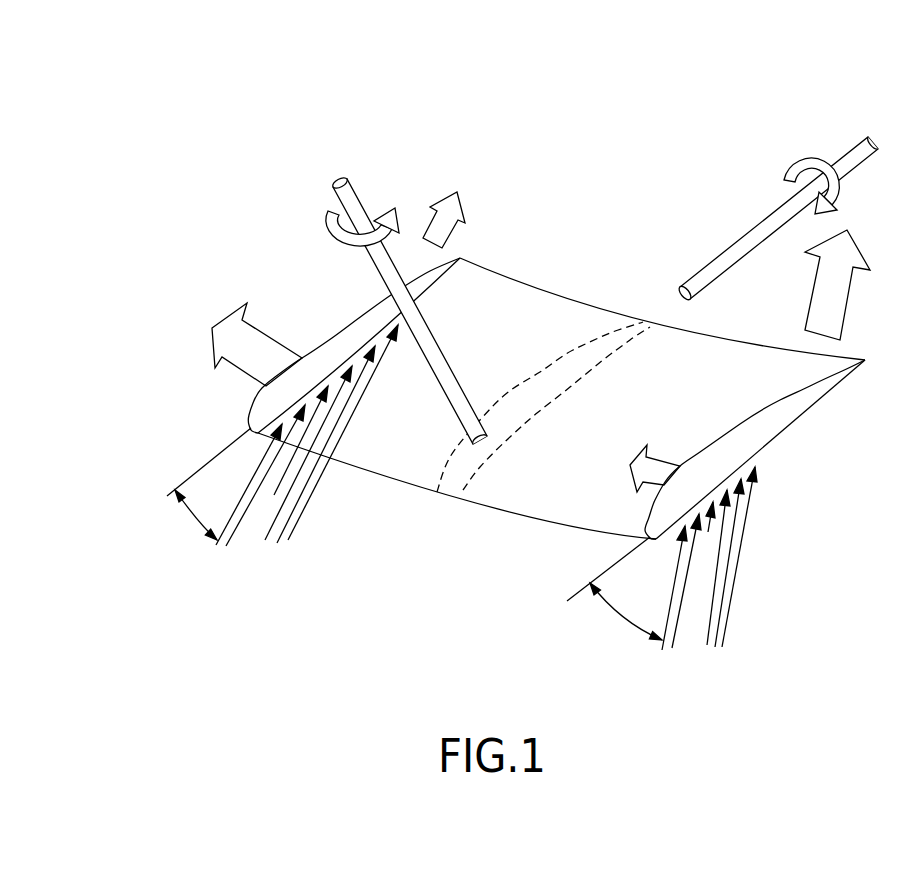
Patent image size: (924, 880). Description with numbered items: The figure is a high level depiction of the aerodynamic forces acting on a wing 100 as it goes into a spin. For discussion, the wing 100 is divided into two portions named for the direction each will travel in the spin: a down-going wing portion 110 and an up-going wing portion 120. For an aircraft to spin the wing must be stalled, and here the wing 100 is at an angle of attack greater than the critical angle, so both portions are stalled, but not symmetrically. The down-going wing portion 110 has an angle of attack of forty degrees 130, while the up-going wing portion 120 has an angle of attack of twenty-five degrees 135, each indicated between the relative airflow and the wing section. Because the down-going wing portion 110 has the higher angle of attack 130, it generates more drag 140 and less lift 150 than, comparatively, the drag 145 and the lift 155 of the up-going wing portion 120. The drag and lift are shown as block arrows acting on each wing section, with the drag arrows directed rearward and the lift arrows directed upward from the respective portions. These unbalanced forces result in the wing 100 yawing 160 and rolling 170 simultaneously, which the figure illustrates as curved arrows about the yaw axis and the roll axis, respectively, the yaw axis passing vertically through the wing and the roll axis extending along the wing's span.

The wing 100 is at (513, 492).
The down-going wing portion 110 is at (693, 381).
The up-going wing portion 120 is at (510, 337).
The angle of attack of 40 degrees 130 is at (619, 618).
The angle of attack of 25 degrees 135 is at (189, 518).
The drag 140 is at (866, 257).
The drag 145 is at (470, 212).
The lift 150 is at (668, 463).
The lift 155 is at (239, 302).
The yawing 160 is at (381, 190).
The rolling 170 is at (809, 158).